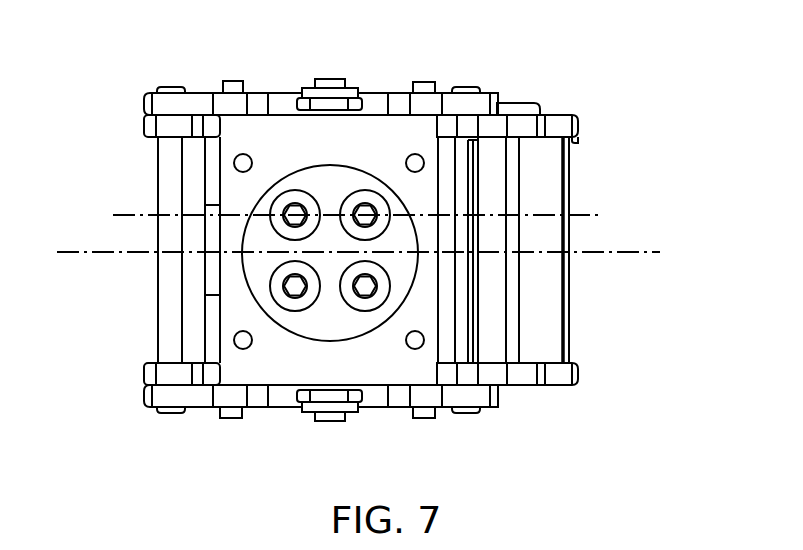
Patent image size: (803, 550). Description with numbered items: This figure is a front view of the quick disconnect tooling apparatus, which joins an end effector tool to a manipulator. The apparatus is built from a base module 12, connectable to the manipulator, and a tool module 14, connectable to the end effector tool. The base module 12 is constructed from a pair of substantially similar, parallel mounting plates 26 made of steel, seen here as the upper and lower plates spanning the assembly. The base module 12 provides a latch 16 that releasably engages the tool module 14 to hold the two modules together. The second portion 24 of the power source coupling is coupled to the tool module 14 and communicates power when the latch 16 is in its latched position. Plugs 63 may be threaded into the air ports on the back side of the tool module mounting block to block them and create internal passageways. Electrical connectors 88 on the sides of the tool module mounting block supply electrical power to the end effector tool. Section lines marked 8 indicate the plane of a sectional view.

The section line 8- 8 is at (113, 215).
The base module 12 is at (57, 252).
The tool module 14 is at (148, 287).
The latch 16 is at (587, 303).
The second portion 24 is at (315, 305).
The mounting plates 26 is at (443, 93).
The plugs 63 is at (295, 190).
The electrical connectors 88 is at (331, 79).